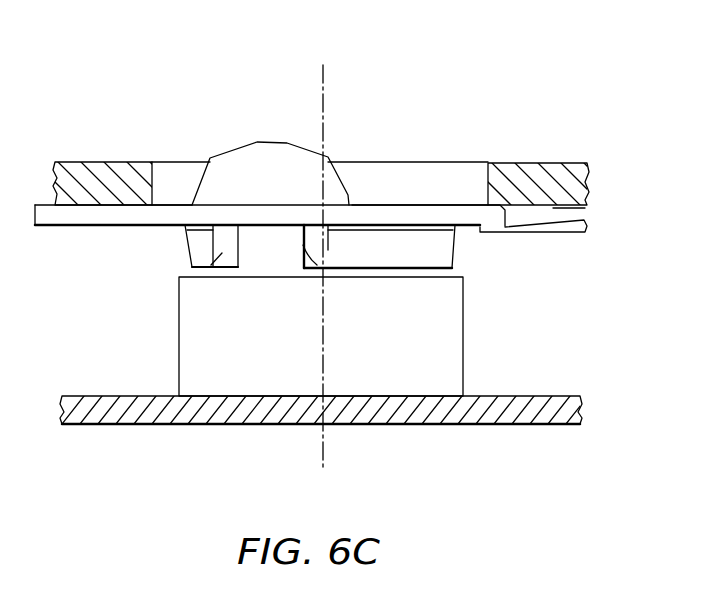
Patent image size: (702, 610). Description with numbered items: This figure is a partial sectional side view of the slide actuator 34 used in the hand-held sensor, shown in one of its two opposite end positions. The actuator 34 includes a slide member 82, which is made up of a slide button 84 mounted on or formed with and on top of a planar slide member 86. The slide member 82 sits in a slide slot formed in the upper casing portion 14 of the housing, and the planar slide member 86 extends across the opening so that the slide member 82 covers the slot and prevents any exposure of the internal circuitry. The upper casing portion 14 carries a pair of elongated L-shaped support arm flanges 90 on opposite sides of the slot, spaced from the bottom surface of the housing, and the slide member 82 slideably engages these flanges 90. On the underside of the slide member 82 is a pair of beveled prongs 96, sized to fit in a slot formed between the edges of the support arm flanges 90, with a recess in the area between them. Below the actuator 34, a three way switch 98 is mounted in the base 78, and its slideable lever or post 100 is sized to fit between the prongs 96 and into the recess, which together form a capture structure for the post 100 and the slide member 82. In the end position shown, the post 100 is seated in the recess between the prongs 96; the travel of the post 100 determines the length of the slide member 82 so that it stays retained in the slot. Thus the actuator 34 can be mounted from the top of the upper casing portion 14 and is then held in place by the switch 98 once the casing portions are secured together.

The slide actuator 34 is at (233, 108).
The slide button 84 is at (270, 150).
The slide member 82 is at (357, 203).
The upper casing portion 14 is at (553, 167).
The planar slide member 86 is at (75, 220).
The support arm flange 90 is at (447, 257).
The prongs 96 is at (303, 243).
The switch post 100 is at (272, 272).
The three way switch 98 is at (400, 358).
The base 78 is at (535, 421).